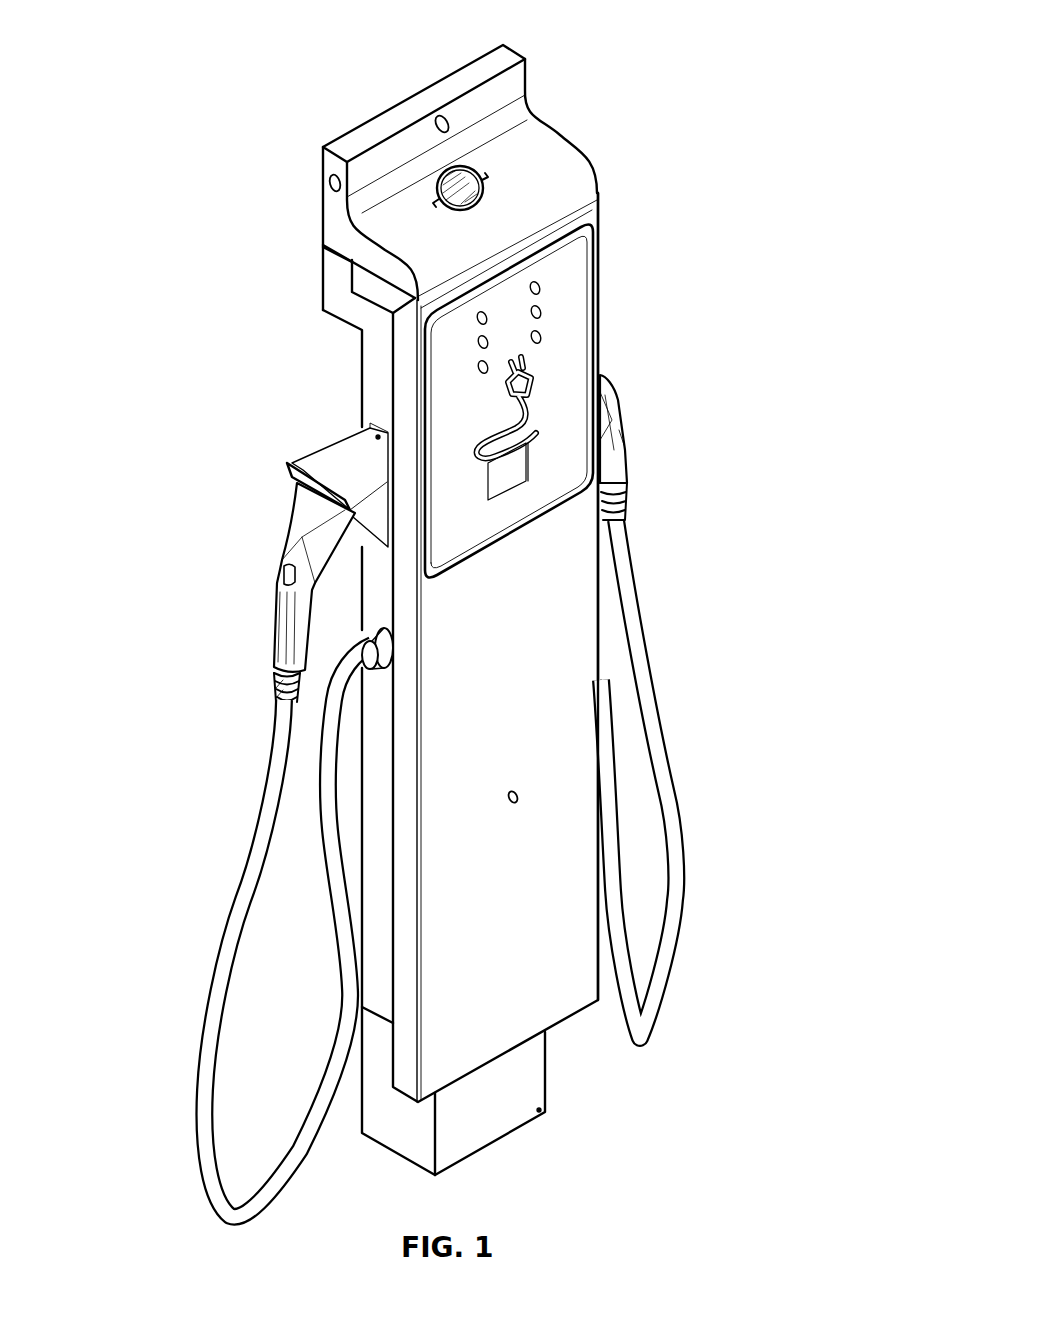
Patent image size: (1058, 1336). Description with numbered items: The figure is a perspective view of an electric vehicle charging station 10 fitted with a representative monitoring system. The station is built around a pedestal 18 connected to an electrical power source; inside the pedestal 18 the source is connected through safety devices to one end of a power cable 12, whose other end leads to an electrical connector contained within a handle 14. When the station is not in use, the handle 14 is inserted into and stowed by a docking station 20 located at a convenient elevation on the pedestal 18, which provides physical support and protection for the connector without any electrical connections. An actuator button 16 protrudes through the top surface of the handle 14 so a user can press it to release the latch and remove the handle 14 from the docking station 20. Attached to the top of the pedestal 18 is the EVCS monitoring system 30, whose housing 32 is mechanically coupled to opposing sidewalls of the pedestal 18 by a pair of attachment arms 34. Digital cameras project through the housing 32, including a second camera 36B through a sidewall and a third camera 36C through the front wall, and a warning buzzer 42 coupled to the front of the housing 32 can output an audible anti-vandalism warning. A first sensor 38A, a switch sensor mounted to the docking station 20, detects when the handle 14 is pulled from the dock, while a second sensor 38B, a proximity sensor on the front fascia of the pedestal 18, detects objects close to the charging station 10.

The electric vehicle charging station 10 is at (660, 260).
The power cable 12 is at (256, 867).
The handle 14 is at (278, 625).
The actuator button 16 is at (283, 570).
The pedestal 18 is at (370, 345).
The docking station 20 is at (318, 465).
The EVCS monitoring system 30 is at (617, 155).
The housing 32 is at (330, 219).
The attachment arms 34 is at (330, 283).
The second digital camera 36B is at (327, 181).
The third digital camera 36C is at (440, 118).
The first sensor 38A is at (340, 458).
The second sensor 38B is at (512, 790).
The warning buzzer 42 is at (455, 193).